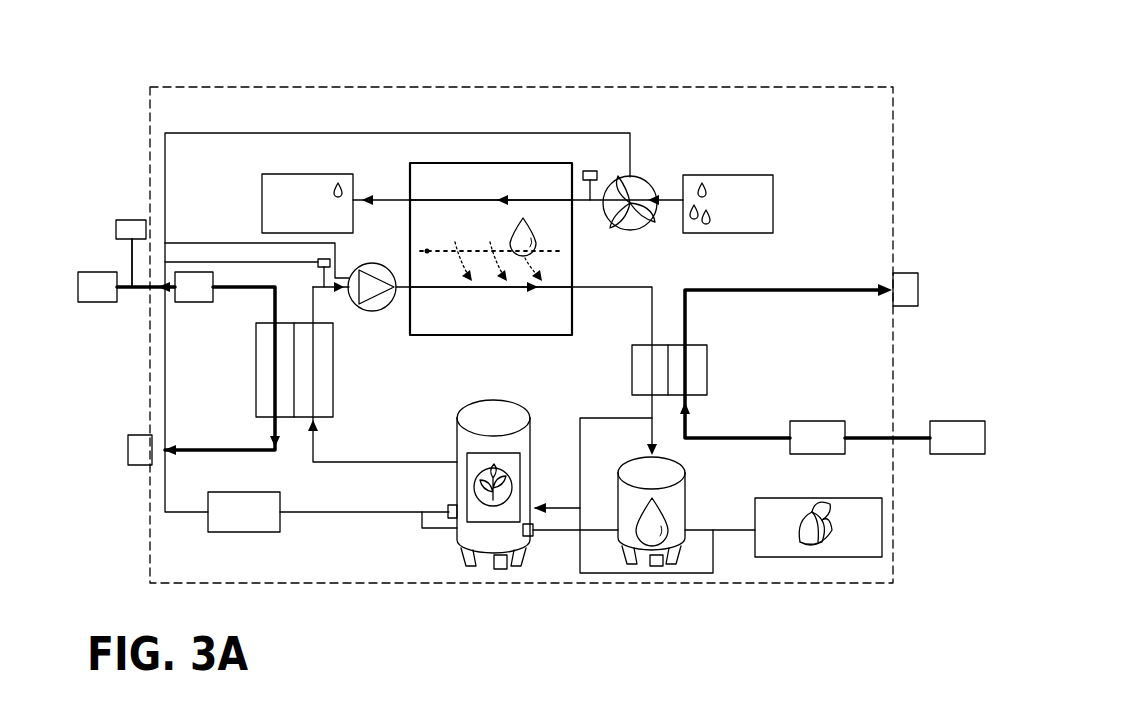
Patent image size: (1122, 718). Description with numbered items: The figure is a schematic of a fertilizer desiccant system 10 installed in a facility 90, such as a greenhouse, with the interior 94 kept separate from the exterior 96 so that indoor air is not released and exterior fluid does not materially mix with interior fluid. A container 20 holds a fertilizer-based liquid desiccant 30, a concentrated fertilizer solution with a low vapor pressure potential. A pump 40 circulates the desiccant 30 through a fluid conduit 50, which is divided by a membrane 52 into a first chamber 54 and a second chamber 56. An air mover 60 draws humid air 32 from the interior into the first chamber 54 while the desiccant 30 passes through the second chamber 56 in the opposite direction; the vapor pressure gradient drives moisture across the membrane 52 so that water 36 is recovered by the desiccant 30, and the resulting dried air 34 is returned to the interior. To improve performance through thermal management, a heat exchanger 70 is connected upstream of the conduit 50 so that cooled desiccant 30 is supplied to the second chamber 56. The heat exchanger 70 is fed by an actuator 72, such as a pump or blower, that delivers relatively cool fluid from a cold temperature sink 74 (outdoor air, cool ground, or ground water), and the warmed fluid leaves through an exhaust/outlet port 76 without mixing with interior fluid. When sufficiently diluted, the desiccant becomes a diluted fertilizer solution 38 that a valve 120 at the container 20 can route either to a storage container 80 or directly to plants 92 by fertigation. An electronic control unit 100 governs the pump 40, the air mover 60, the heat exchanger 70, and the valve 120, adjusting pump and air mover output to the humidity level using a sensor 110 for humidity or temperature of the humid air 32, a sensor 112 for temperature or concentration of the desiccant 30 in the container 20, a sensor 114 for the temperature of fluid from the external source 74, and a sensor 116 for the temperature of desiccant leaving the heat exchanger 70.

The fertilizer desiccant system 10 is at (898, 64).
The container 20 is at (463, 409).
The fertilizer-based liquid desiccant 30 is at (482, 506).
The humid air 32 is at (733, 234).
The dried air 34 is at (318, 173).
The water 36 is at (550, 232).
The diluted fertilizer solution 38 is at (728, 552).
The pump 40 is at (355, 272).
The fluid conduit 50 is at (556, 162).
The membrane 52 is at (428, 248).
The first chamber 54 is at (486, 194).
The second chamber 56 is at (511, 327).
The air mover 60 is at (655, 188).
The heat exchanger 70 is at (334, 373).
The actuator 72 is at (193, 303).
The cold temperature sink 74 is at (126, 287).
The exhaust/outlet port 76 is at (128, 458).
The container 80 is at (686, 476).
The facility 90 is at (353, 86).
The plants 92 is at (797, 558).
The interior 94 is at (301, 122).
The exterior 96 is at (116, 122).
The electronic control unit 100 is at (245, 533).
The sensor 110 is at (590, 170).
The sensor 112 is at (449, 508).
The sensor 114 is at (132, 219).
The sensor 116 is at (318, 262).
The valve 120 is at (533, 538).